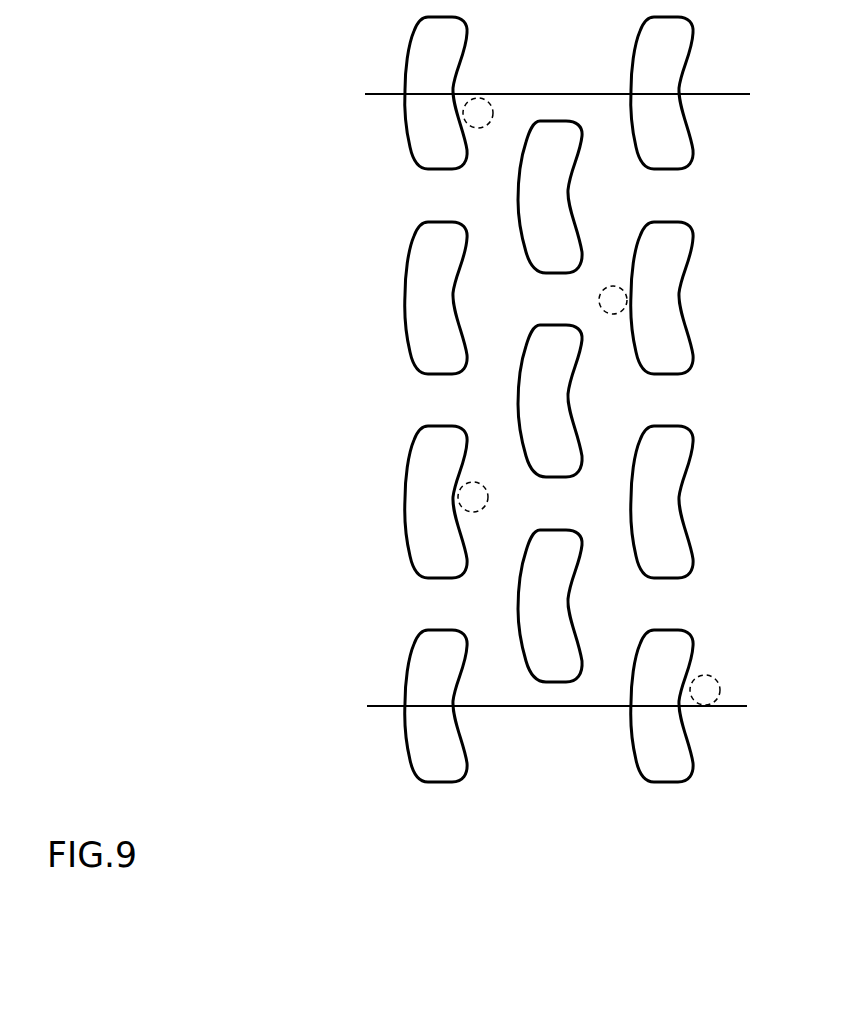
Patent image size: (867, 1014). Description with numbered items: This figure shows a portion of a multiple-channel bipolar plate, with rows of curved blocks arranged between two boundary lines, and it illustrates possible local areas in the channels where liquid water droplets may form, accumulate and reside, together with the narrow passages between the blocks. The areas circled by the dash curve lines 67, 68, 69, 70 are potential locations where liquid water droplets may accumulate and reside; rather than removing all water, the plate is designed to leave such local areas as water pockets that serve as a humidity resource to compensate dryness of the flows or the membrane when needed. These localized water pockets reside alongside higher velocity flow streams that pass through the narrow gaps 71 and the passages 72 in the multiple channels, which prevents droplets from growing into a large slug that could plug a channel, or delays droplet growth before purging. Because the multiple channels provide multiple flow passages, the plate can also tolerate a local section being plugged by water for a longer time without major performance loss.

The dash curve line area 67 is at (620, 296).
The dash curve line area 68 is at (708, 688).
The dash curve line area 69 is at (480, 102).
The dash curve line area 70 is at (468, 491).
The narrow gap 71 is at (670, 396).
The passage 72 is at (610, 462).